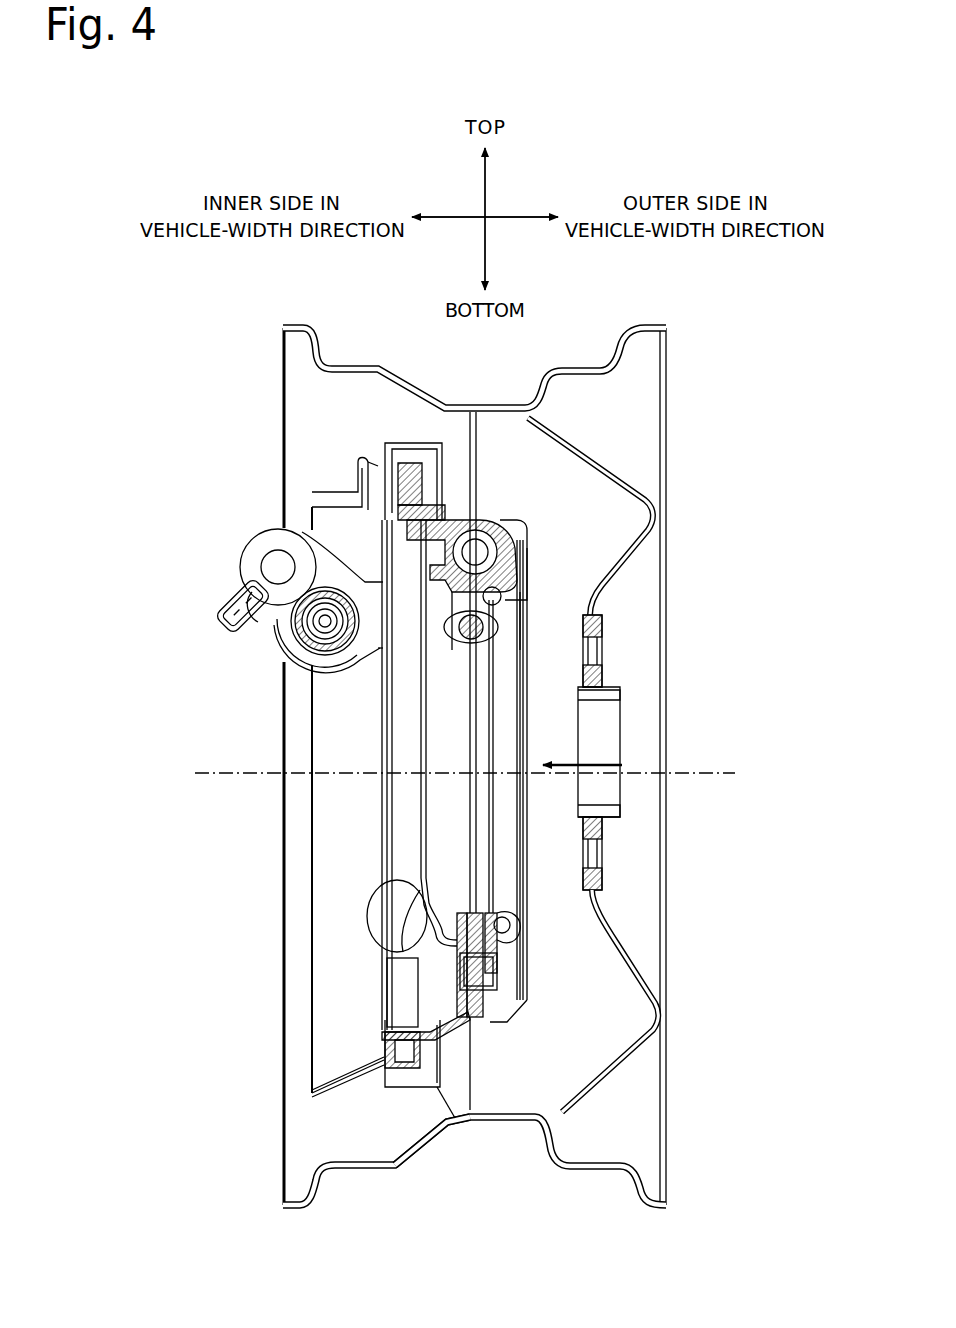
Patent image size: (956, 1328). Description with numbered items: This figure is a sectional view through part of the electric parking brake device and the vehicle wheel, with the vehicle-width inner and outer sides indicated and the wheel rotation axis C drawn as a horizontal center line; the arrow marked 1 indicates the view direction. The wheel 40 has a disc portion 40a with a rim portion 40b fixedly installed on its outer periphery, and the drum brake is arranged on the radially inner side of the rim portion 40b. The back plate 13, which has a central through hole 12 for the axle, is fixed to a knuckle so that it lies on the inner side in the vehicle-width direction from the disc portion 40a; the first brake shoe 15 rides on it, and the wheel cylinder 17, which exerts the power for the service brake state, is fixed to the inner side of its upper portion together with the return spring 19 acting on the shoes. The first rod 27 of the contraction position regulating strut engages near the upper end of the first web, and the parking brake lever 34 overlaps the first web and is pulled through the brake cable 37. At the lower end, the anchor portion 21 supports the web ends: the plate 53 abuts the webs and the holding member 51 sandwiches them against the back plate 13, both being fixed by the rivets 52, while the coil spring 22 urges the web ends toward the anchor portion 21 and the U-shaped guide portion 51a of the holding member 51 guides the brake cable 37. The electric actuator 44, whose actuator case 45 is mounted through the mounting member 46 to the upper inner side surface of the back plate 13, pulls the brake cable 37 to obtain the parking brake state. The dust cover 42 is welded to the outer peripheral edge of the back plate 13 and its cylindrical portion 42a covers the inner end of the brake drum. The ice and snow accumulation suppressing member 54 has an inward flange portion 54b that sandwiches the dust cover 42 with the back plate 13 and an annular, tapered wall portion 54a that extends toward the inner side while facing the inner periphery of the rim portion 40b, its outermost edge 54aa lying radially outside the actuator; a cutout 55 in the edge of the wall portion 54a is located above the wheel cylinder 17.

The vehicle / in-wheel motor unit 1 is at (589, 750).
The rotation axis C is at (688, 772).
The through hole 12 is at (382, 645).
The back plate 13 is at (421, 874).
The first brake shoe 15 is at (468, 783).
The wheel cylinder 17 is at (486, 530).
The return spring 19 is at (505, 582).
The anchor portion 21 is at (445, 980).
The coil spring 22 is at (490, 1003).
The first rod 27 is at (495, 642).
The parking brake lever 34 is at (488, 822).
The brake cable 37 is at (506, 916).
The wheel 40 is at (628, 462).
The disc portion 40a is at (612, 582).
The rim portion 40b is at (542, 397).
The dust cover 42 is at (382, 1072).
The cylindrical portion 42a is at (410, 1092).
The electric actuator 44 is at (268, 641).
The actuator case 45 is at (305, 658).
The mounting member 46 is at (318, 660).
The holding member 51 is at (481, 1017).
The guide portion 51a is at (488, 913).
The rivet 52 is at (500, 973).
The plate 53 is at (463, 925).
The ice and snow accumulation suppressing member 54 is at (335, 1095).
The wall portion 54a is at (345, 1093).
The outermost edge 54aa is at (312, 1092).
The inward flange portion 54b is at (387, 1052).
The cutout 55 is at (367, 498).